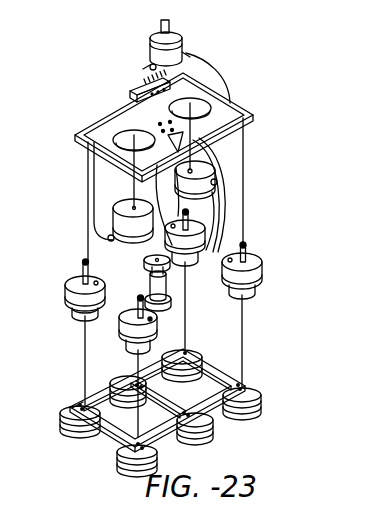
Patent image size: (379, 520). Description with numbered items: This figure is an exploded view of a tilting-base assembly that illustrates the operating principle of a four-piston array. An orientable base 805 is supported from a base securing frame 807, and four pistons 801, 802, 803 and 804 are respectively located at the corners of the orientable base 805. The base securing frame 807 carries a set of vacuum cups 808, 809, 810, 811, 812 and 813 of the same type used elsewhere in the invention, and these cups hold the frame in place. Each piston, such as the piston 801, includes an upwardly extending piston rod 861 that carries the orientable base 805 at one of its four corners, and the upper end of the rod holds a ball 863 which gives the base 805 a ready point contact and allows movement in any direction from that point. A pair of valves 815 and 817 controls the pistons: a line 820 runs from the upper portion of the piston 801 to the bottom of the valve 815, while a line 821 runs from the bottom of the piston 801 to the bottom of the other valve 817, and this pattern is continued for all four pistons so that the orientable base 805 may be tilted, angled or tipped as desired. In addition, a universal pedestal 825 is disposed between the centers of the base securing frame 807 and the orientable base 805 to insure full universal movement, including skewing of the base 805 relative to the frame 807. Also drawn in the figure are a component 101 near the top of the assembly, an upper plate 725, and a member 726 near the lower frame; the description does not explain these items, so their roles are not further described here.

The terminal block 101 is at (140, 88).
The orientable base 805 is at (203, 90).
The top mounting plate 725 is at (223, 103).
The valve 817 is at (255, 128).
The line 821 is at (137, 230).
The valve 815 is at (113, 212).
The line 820 is at (150, 302).
The piston 804 is at (203, 227).
The piston 801 is at (65, 288).
The ball 863 is at (83, 270).
The piston rod 861 is at (68, 278).
The piston 803 is at (261, 270).
The universal pedestal 825 is at (166, 285).
The piston 802 is at (113, 343).
The vacuum cup 812 is at (200, 345).
The base securing frame 807 is at (218, 381).
The vacuum cup 813 is at (113, 380).
The vacuum cup 808 is at (66, 430).
The isolator pad 726 is at (184, 342).
The vacuum cup 811 is at (260, 390).
The vacuum cup 810 is at (210, 429).
The vacuum cup 809 is at (160, 450).